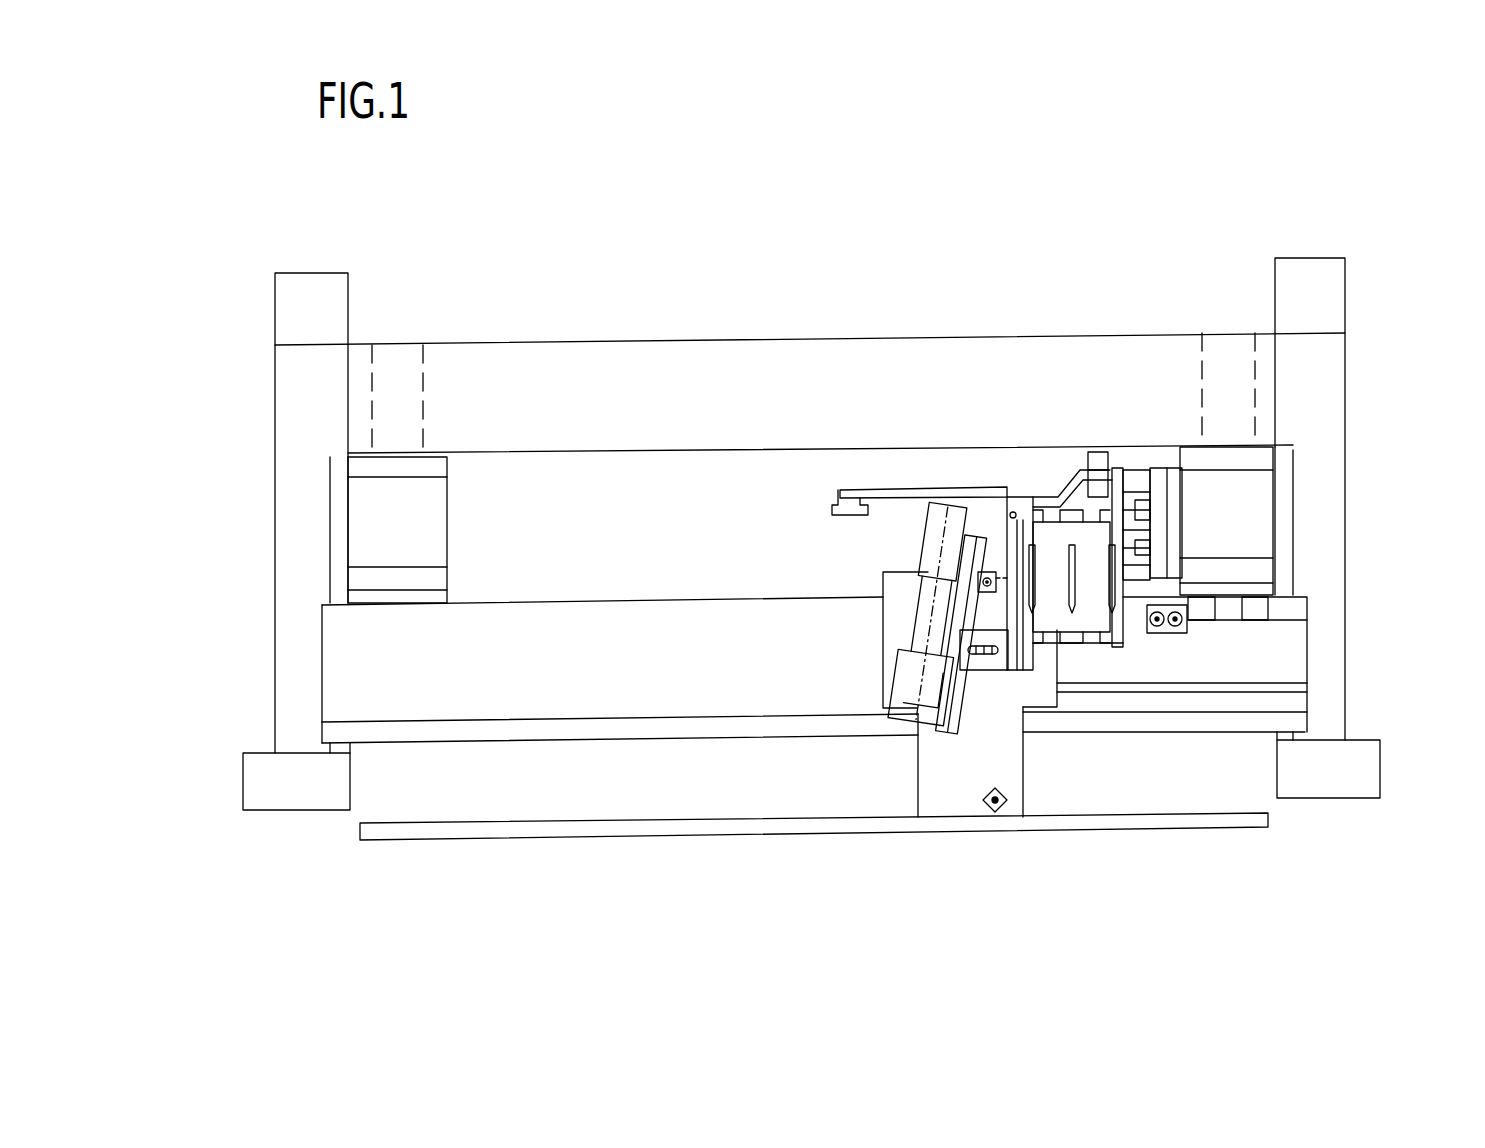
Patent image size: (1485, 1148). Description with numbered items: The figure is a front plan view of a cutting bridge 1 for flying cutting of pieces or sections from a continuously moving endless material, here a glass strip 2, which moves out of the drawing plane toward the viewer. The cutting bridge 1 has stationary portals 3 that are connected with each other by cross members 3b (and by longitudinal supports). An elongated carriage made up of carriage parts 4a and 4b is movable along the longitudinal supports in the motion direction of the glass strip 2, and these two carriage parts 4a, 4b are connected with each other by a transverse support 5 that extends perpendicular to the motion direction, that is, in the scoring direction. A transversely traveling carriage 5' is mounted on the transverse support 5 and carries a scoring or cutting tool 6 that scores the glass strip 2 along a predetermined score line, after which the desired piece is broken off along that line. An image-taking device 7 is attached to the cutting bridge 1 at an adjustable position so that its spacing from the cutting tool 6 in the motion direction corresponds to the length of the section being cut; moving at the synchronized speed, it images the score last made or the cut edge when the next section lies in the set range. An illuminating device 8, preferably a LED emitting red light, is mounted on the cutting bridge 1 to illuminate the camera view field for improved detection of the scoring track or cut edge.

The cutting bridge 1 is at (817, 558).
The glass strip 2 is at (660, 830).
The stationary portals 3 is at (305, 402).
The cross members 3b is at (1082, 375).
The carriage part 4a is at (1250, 515).
The carriage part 4b is at (375, 525).
The transverse support 5 is at (876, 660).
The transversely traveling carriage 5' is at (970, 762).
The scoring or cutting tool 6 is at (996, 805).
The image-taking device 7 is at (903, 702).
The illuminating device 8 is at (852, 517).